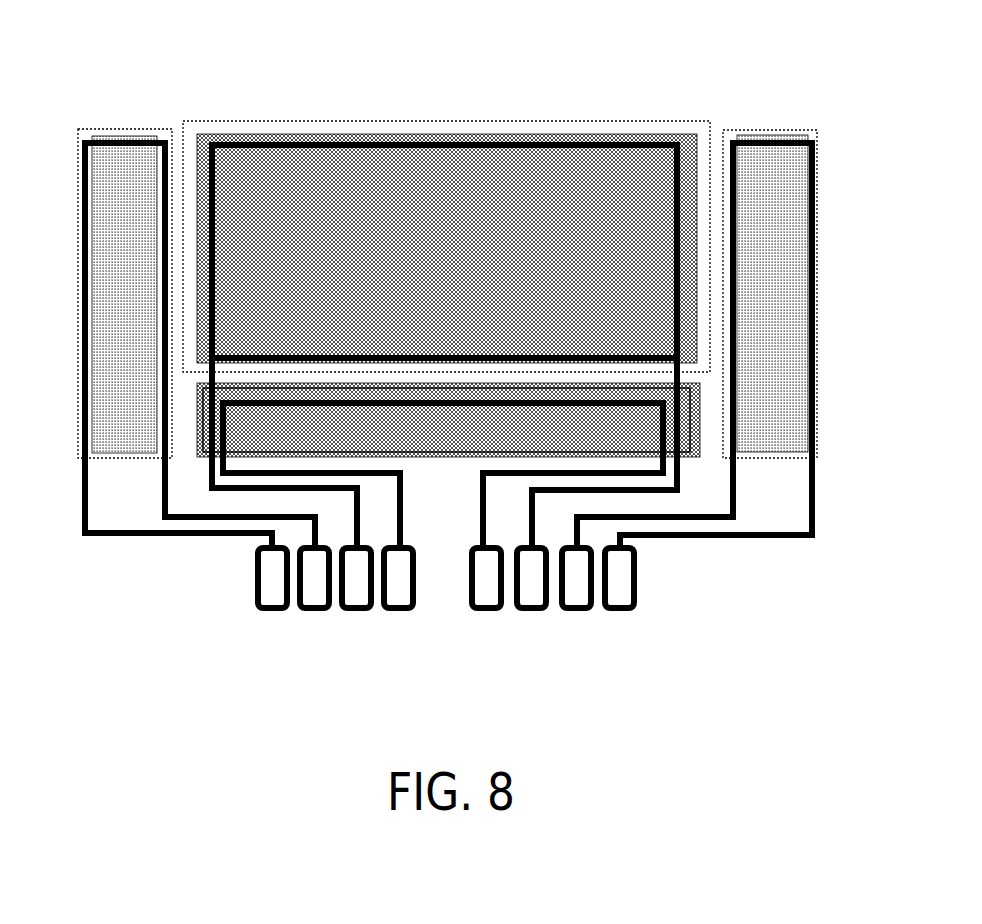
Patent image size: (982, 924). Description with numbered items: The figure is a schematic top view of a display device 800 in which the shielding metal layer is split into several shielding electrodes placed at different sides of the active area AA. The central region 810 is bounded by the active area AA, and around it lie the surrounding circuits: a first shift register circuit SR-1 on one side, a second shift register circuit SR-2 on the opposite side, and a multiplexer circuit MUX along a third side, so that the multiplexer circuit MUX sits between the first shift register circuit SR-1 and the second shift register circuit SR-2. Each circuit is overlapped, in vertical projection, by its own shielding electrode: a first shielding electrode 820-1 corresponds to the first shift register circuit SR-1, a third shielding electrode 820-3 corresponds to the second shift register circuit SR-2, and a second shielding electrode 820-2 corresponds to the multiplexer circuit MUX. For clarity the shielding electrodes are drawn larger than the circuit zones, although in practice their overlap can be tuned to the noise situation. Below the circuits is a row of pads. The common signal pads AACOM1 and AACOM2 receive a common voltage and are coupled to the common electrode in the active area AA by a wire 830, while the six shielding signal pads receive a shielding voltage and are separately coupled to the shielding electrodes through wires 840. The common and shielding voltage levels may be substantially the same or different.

The display device 800 is at (855, 762).
The display area 810 is at (447, 134).
The first shielding electrode 820-1 is at (100, 129).
The second shielding electrode 820-2 is at (204, 405).
The third shielding electrode 820-3 is at (797, 130).
The wire 830 is at (574, 143).
The wires 840 is at (120, 537).
The active area AA is at (332, 122).
The first shift register circuit SR-1 is at (123, 136).
The second shift register circuit SR-2 is at (778, 134).
The multiplexer circuit MUX is at (688, 428).
The common signal pad AACOM1 is at (353, 610).
The common signal pad AACOM2 is at (525, 612).